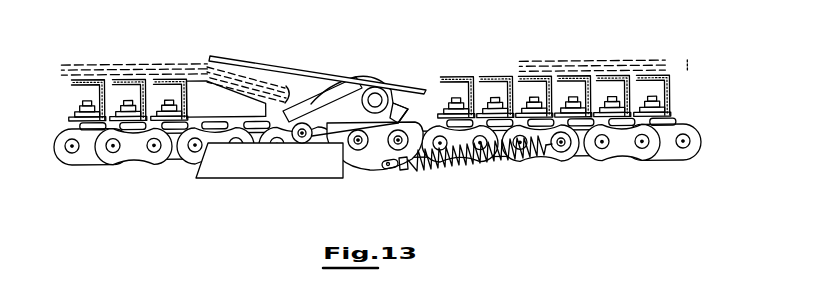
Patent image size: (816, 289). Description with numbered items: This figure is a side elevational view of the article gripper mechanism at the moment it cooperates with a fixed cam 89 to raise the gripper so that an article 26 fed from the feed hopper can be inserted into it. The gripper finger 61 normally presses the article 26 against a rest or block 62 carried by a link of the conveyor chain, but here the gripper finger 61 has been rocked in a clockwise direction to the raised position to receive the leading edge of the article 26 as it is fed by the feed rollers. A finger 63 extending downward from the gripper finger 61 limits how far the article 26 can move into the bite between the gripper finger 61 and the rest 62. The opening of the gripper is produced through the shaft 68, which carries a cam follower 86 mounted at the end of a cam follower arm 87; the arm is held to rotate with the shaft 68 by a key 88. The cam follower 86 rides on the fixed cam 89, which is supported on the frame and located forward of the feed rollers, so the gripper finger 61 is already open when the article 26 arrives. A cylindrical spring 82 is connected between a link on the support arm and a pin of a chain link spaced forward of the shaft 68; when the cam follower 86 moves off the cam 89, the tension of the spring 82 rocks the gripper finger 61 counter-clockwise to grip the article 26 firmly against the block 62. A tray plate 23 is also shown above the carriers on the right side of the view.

The article 26 is at (137, 63).
The tray plate 23 is at (574, 59).
The rest 62 is at (226, 92).
The gripper finger 61 is at (288, 71).
The finger 63 is at (350, 100).
The cam follower arm 87 is at (375, 94).
The key 88 is at (379, 97).
The shaft 68 is at (391, 100).
The fixed cam 89 is at (252, 178).
The cam follower 86 is at (310, 145).
The spring 82 is at (457, 162).